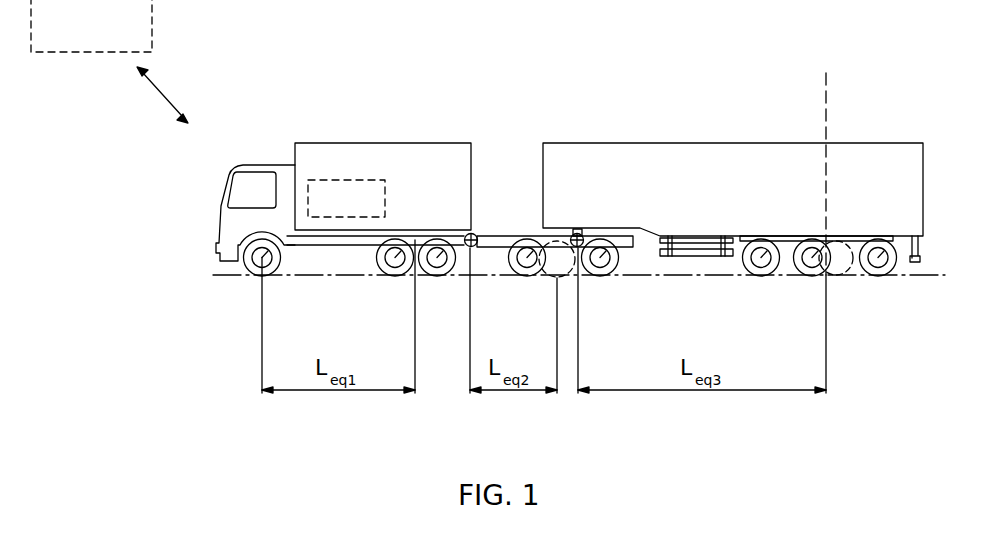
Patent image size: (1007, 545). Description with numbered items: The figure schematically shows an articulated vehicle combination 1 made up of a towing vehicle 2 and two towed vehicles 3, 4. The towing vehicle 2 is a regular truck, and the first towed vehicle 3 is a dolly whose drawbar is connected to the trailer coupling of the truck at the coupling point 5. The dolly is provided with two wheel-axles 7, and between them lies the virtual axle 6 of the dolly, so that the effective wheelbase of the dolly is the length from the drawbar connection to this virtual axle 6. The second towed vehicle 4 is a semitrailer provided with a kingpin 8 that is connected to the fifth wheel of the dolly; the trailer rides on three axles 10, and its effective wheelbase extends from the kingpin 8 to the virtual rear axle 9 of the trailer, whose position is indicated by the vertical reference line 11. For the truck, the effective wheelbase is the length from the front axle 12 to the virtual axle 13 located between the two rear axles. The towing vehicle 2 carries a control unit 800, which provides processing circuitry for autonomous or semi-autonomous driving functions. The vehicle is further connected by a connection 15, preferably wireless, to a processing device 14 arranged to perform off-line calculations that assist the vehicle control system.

The articulated vehicle combination 1 is at (352, 81).
The towing vehicle 2 is at (376, 158).
The first towed vehicle 3 is at (522, 236).
The second towed vehicle 4 is at (740, 178).
The coupling between truck and dolly 5 is at (474, 233).
The virtual axle of the dolly 6 is at (545, 278).
The wheel-axles 7 is at (519, 278).
The kingpin 8 is at (592, 236).
The virtual rear axle 9 is at (851, 278).
The trailer wheels/axles 10 is at (908, 340).
The trailer equivalent axle reference line 11 is at (827, 111).
The front axle 12 is at (255, 278).
The virtual axle 13 is at (401, 278).
The processing device 14 is at (91, 26).
The connection 15 is at (161, 95).
The control unit 800 is at (346, 198).